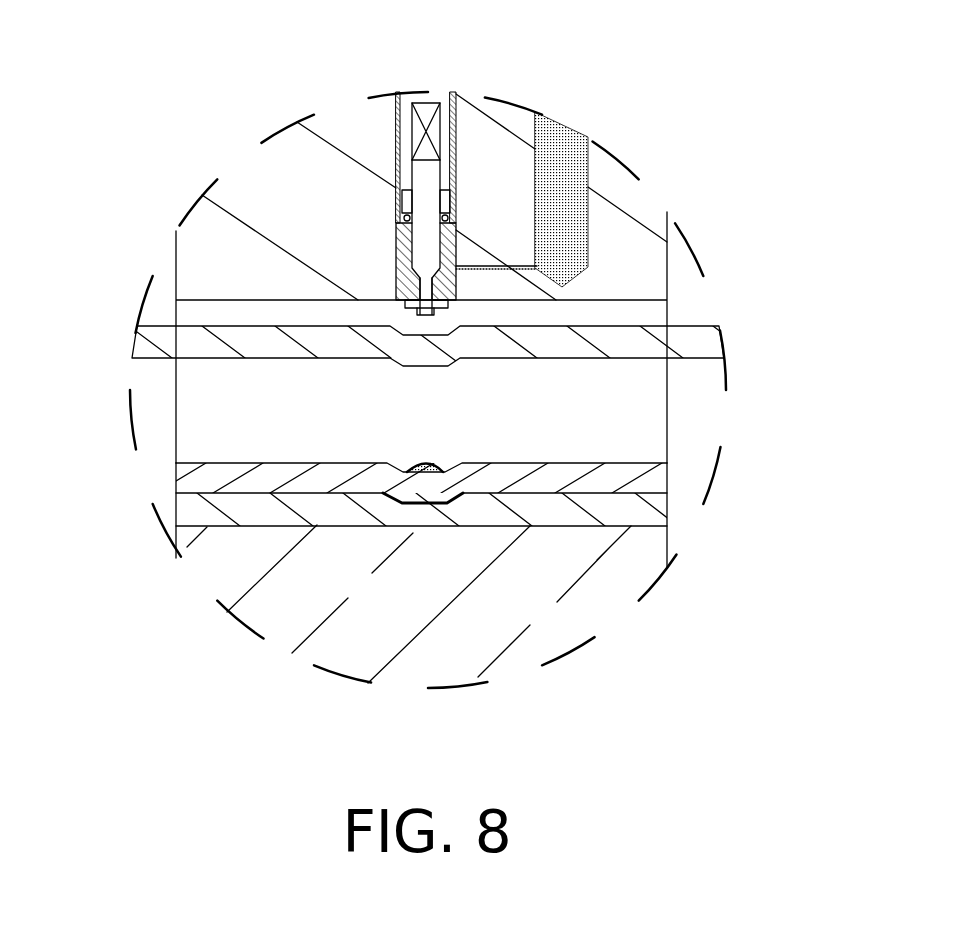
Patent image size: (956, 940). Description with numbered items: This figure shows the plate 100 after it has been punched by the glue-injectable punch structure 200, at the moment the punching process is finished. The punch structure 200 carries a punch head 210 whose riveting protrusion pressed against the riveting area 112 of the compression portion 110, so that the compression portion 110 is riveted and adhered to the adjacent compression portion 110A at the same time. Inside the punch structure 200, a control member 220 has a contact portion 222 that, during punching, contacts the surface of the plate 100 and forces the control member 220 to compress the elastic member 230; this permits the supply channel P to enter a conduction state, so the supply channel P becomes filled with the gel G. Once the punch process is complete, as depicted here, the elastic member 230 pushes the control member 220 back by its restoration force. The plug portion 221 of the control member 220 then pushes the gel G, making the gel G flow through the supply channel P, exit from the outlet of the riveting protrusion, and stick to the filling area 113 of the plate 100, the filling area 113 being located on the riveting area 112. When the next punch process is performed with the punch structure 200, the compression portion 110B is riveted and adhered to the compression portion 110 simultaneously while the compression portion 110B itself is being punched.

The glue-injectable punch structure 200 is at (172, 92).
The punch head 210 is at (300, 163).
The control member 220 is at (425, 187).
The plug portion 221 is at (425, 248).
The contact portion 222 is at (433, 336).
The elastic member 230 is at (410, 130).
The plate 100 is at (690, 343).
The compression portion 110 is at (640, 482).
The compression portion 110A is at (640, 510).
The compression portion 110B is at (600, 337).
The riveting area 112 is at (405, 490).
The filling area 113 is at (430, 470).
The supply channel P is at (383, 279).
The gel G is at (570, 175).